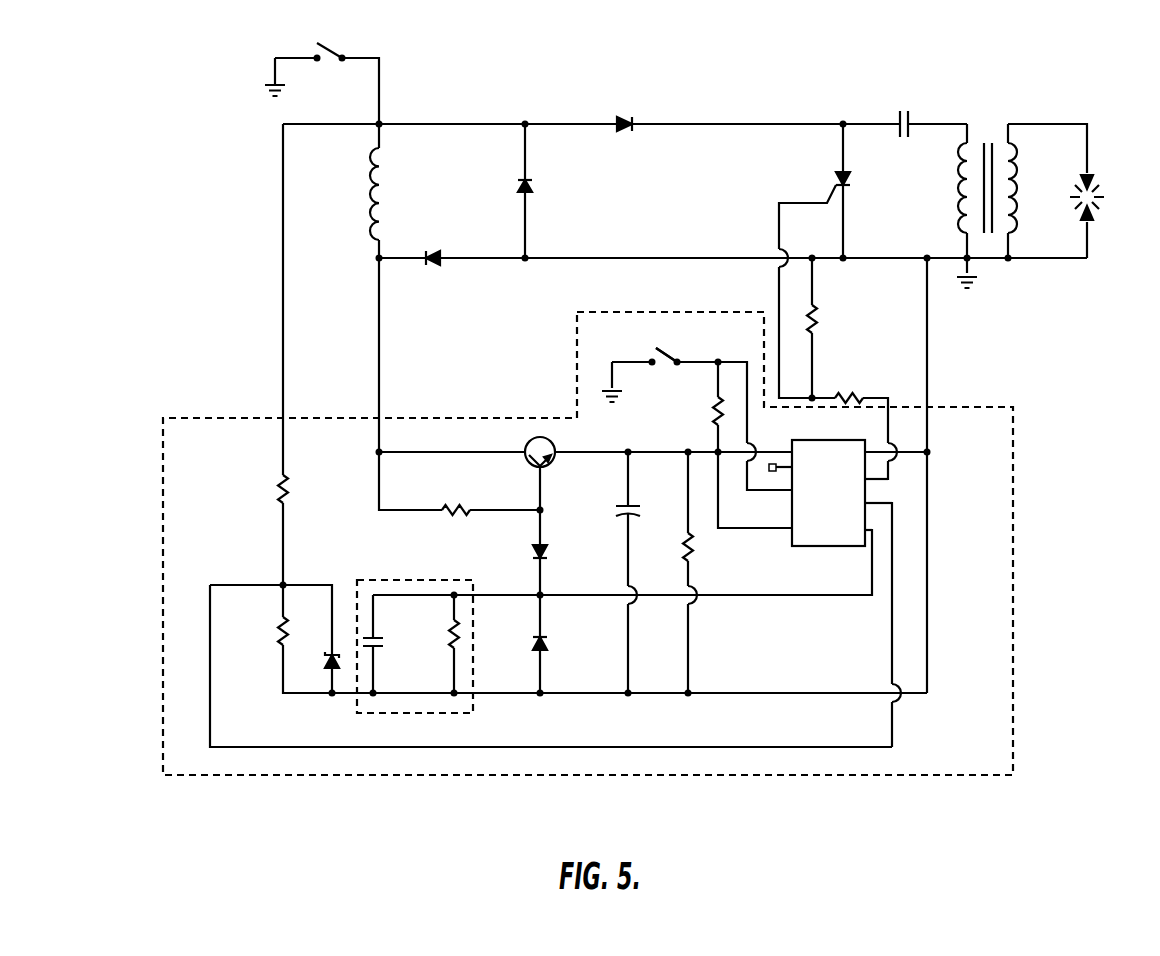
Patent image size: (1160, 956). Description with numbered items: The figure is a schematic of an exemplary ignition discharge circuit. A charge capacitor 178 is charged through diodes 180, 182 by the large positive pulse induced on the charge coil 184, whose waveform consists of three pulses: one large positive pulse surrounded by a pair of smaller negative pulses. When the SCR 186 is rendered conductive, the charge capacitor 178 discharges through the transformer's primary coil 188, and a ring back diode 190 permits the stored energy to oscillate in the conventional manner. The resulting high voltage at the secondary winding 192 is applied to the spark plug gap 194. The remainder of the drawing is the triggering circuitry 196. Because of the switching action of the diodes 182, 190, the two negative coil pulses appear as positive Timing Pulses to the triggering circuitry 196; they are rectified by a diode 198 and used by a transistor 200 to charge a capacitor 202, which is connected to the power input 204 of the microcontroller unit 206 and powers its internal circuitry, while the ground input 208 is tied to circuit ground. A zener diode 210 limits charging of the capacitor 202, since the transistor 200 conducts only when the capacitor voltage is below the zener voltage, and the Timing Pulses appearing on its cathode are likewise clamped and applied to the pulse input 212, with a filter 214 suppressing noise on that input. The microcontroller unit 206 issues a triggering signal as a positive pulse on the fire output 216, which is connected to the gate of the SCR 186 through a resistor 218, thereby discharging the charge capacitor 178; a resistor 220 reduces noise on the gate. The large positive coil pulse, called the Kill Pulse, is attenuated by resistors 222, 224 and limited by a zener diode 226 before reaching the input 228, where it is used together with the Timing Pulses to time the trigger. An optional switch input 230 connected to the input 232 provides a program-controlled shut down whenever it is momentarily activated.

The charge capacitor 178 is at (898, 120).
The diode 180 is at (621, 119).
The diode 182 is at (430, 257).
The charge coil 184 is at (372, 186).
The SCR 186 is at (838, 178).
The primary coil 188 is at (963, 194).
The ring back diode 190 is at (530, 169).
The secondary winding 192 is at (1011, 194).
The spark plug gap 194 is at (1095, 187).
The triggering circuitry 196 is at (232, 418).
The diode 198 is at (536, 549).
The transistor 200 is at (526, 444).
The capacitor 202 is at (619, 515).
The power input 204 is at (798, 458).
The microcontroller unit 206 is at (820, 440).
The ground input 208 is at (879, 458).
The zener diode 210 is at (536, 637).
The pulse input 212 is at (852, 532).
The filter 214 is at (412, 575).
The fire output 216 is at (860, 485).
The resistor 218 is at (843, 395).
The resistor 220 is at (818, 317).
The resistor 222 is at (280, 487).
The resistor 224 is at (280, 638).
The zener diode 226 is at (330, 653).
The input 228 is at (862, 508).
The switch input 230 is at (672, 351).
The input 232 is at (787, 492).